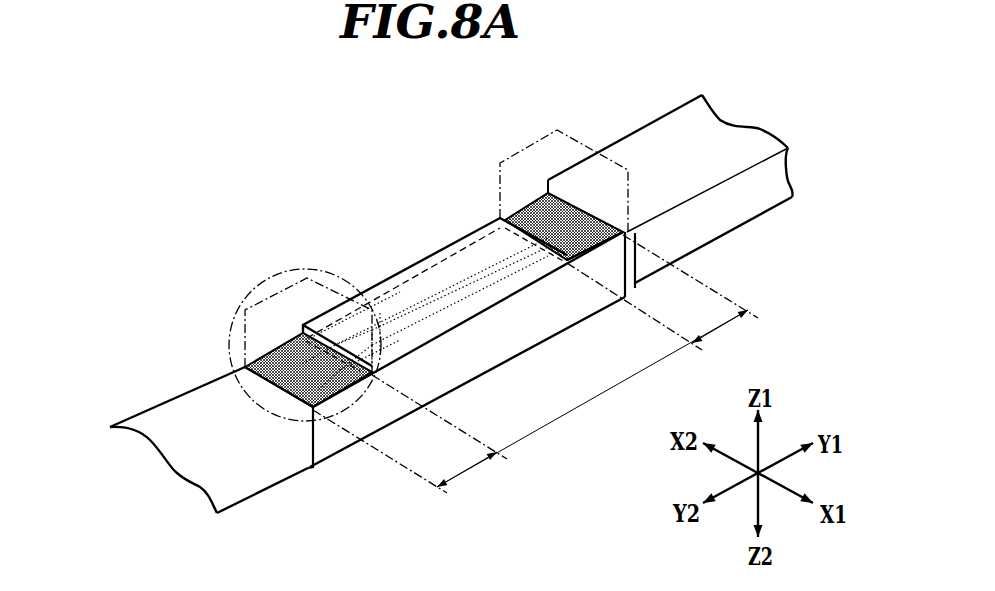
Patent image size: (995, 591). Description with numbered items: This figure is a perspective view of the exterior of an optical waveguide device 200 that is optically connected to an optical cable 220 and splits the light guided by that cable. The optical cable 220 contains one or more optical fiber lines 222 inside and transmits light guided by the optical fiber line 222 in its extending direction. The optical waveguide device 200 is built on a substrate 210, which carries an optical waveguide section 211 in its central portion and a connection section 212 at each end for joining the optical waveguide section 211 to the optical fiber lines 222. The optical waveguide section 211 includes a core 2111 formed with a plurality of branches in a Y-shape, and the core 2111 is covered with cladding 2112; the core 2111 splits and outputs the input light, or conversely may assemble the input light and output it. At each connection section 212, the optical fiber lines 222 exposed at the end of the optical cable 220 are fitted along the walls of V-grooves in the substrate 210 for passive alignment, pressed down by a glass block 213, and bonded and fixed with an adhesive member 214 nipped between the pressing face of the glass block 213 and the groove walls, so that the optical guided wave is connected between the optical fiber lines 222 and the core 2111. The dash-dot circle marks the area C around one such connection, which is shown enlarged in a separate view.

The optical waveguide device 200 is at (342, 135).
The substrate 210 is at (505, 351).
The optical waveguide section 211 is at (592, 398).
The connection section 212 is at (537, 369).
The glass block 213 is at (310, 279).
The adhesive member 214 is at (267, 355).
The optical cable 220 is at (158, 417).
The optical fiber line 222 is at (313, 360).
The core 2111 is at (430, 302).
The cladding 2112 is at (452, 243).
The area C is at (228, 347).